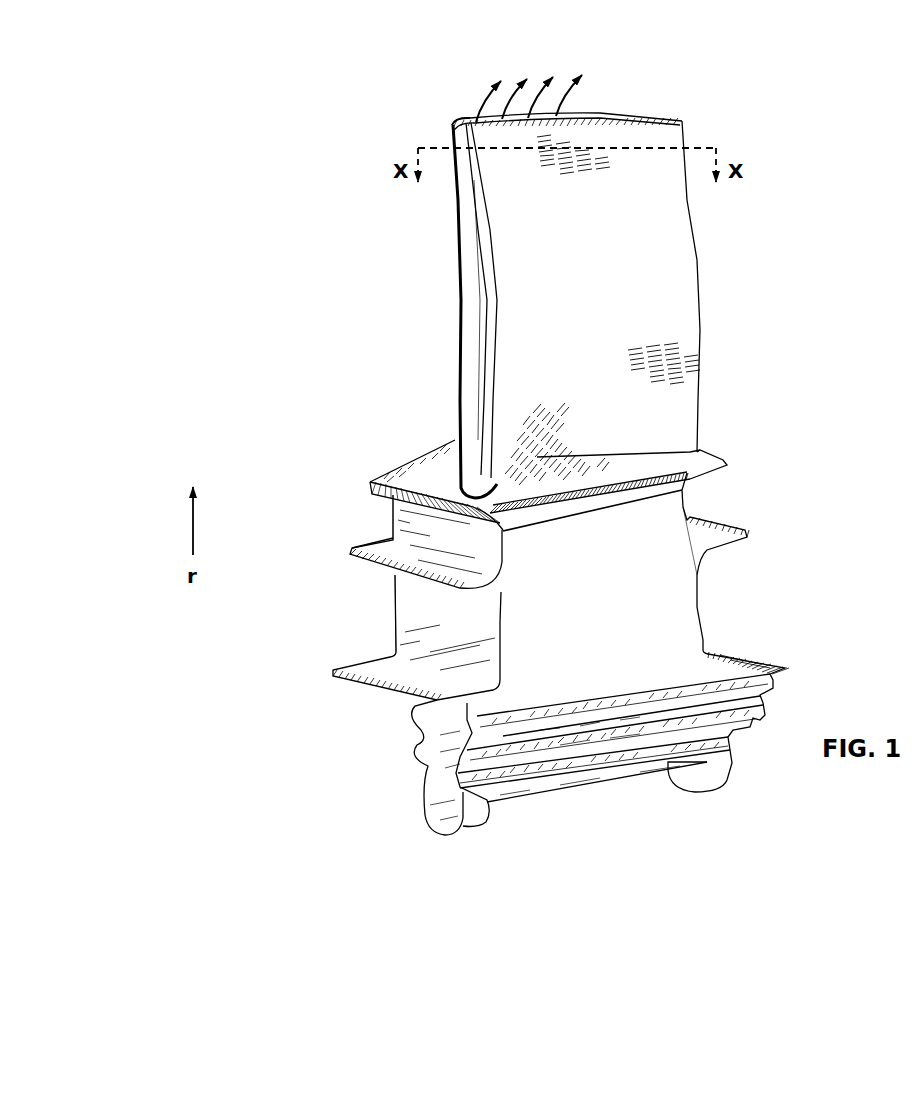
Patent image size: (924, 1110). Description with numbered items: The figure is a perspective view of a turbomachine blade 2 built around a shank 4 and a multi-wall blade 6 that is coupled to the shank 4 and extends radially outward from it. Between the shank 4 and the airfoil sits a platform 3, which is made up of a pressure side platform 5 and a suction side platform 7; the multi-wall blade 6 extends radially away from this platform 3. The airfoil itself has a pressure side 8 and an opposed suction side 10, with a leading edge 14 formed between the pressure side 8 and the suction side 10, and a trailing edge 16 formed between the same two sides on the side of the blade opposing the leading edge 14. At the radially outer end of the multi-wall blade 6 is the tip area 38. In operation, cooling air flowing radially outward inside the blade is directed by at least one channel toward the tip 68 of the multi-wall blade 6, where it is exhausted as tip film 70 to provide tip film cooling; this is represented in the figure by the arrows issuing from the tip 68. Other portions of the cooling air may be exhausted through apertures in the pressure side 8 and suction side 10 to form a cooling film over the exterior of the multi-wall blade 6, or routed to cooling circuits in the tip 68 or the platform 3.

The turbomachine blade 2 is at (253, 146).
The platform 3 is at (362, 495).
The shank 4 is at (597, 599).
The pressure side platform 5 is at (600, 470).
The multi-wall blade 6 is at (582, 256).
The suction side platform 7 is at (418, 465).
The pressure side 8 is at (680, 327).
The suction side 10 is at (452, 265).
The leading edge 14 is at (470, 330).
The trailing edge 16 is at (697, 242).
The tip area 38 is at (648, 115).
The tip 68 is at (462, 118).
The tip film 70 is at (466, 78).